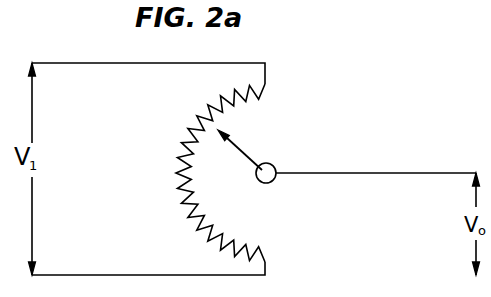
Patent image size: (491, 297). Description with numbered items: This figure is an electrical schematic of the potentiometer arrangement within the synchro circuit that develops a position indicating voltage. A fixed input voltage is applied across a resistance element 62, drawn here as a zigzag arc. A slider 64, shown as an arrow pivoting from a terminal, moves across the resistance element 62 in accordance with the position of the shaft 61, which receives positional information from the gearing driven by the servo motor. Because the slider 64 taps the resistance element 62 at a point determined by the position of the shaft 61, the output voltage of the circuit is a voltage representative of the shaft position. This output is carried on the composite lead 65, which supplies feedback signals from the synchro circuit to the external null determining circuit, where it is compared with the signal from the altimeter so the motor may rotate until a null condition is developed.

The shaft 61 is at (272, 165).
The resistance element 62 is at (183, 148).
The slider 64 is at (237, 146).
The composite lead 65 is at (413, 172).